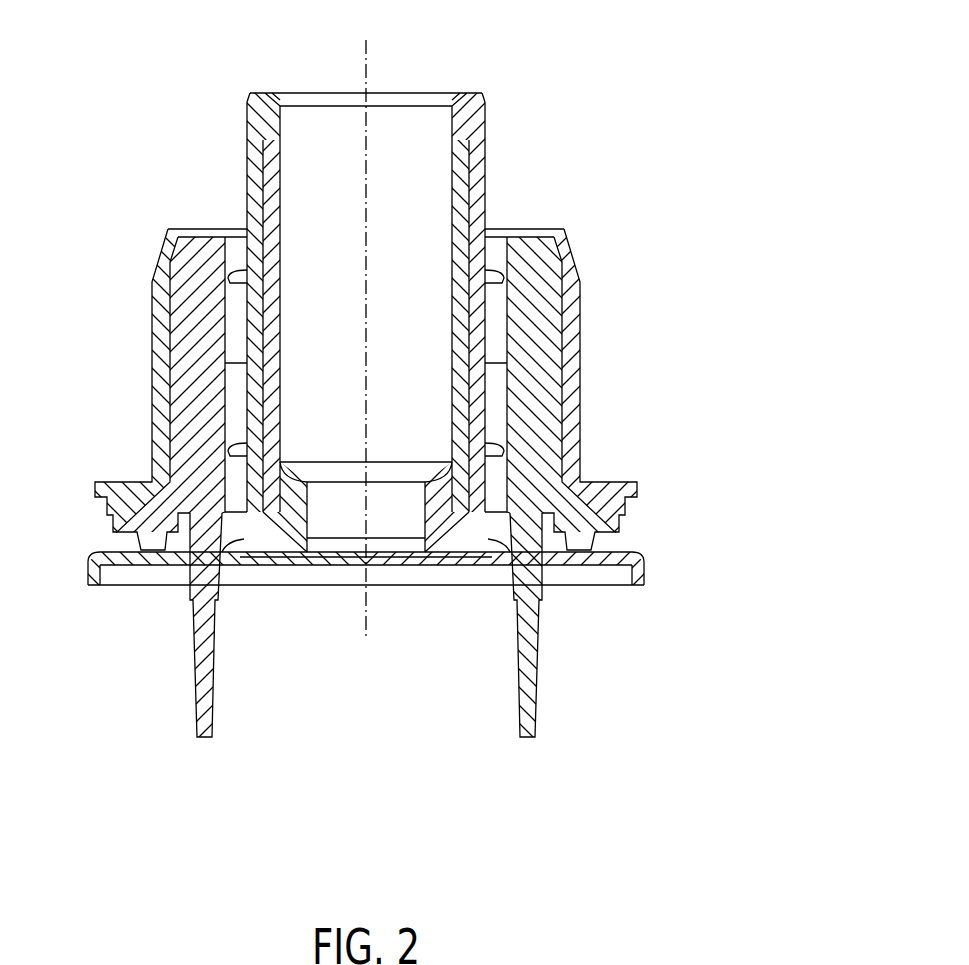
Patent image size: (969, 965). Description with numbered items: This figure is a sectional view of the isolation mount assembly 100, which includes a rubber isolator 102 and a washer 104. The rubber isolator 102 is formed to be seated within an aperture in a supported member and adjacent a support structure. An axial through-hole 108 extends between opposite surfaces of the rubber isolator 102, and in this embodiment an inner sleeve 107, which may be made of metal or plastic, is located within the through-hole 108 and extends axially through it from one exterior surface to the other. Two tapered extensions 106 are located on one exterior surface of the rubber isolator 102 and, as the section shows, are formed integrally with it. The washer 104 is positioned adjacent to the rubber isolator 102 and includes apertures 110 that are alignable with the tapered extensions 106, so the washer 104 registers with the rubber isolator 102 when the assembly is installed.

The isolation mount assembly 100 is at (410, 377).
The rubber isolator 102 is at (553, 322).
The washer 104 is at (623, 570).
The tapered extensions 106 is at (203, 681).
The inner sleeve 107 is at (273, 167).
The axial through-hole 108 is at (425, 193).
The apertures 110 is at (542, 553).